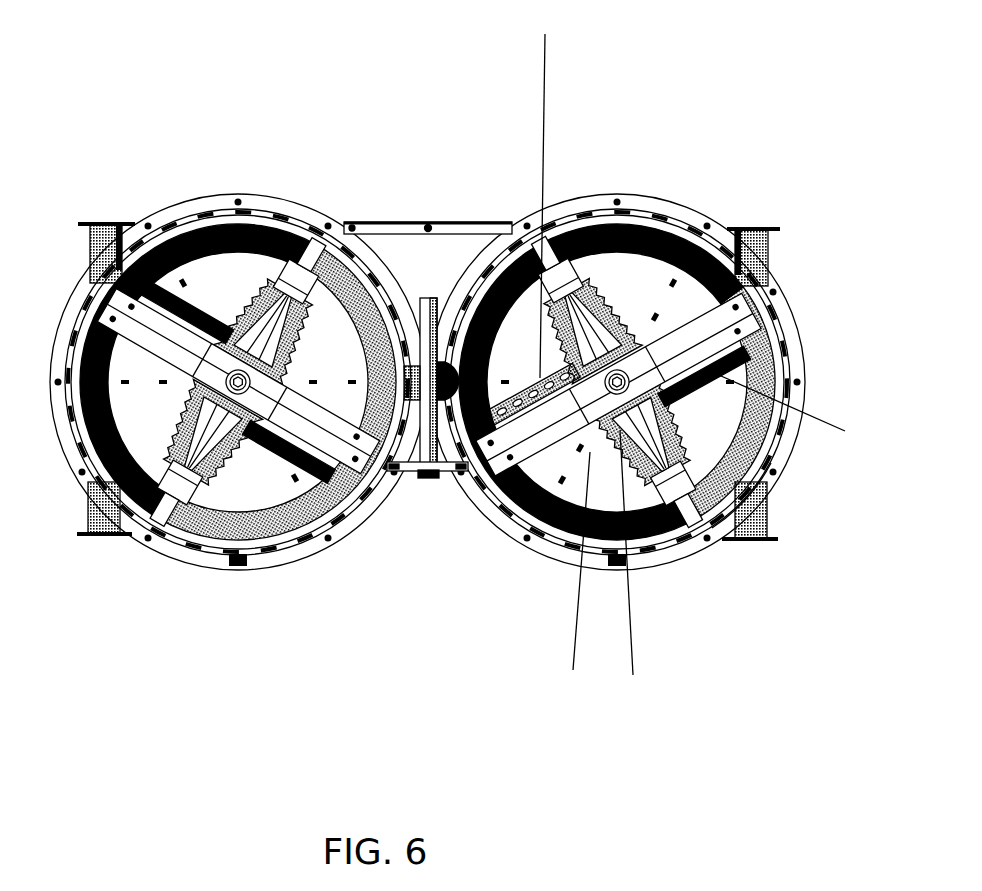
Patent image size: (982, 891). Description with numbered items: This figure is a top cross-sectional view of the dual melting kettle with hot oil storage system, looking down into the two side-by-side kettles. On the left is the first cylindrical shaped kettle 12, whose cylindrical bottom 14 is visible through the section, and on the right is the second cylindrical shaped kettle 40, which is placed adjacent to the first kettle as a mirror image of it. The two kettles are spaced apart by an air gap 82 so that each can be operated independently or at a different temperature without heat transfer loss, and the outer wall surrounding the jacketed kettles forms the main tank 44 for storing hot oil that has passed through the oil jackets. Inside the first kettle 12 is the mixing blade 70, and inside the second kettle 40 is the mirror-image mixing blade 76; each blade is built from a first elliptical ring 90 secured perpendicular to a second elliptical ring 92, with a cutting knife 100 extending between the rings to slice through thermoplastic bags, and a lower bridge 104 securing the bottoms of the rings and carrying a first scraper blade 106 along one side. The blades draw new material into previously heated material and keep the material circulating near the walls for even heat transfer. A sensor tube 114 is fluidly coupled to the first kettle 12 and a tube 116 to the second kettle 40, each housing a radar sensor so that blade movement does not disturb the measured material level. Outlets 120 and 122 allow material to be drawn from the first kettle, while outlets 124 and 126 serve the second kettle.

The first cylindrical shaped kettle 12 is at (168, 592).
The cylindrical bottom 14 is at (637, 500).
The second cylindrical shaped kettle 40 is at (800, 238).
The main tank 44 is at (443, 262).
The mixing blade 70 is at (257, 415).
The mixing blade 76 is at (608, 540).
The air gap 82 is at (424, 300).
The first elliptical ring 90 is at (768, 487).
The second elliptical ring 92 is at (617, 315).
The cutting knife 100 is at (637, 562).
The lower bridge 104 is at (781, 421).
The first scraper blade 106 is at (526, 212).
The sensor tube 114 is at (414, 472).
The tube 116 is at (453, 478).
The outlet 120 is at (108, 218).
The outlet 122 is at (87, 542).
The outlet 124 is at (758, 217).
The outlet 126 is at (753, 547).